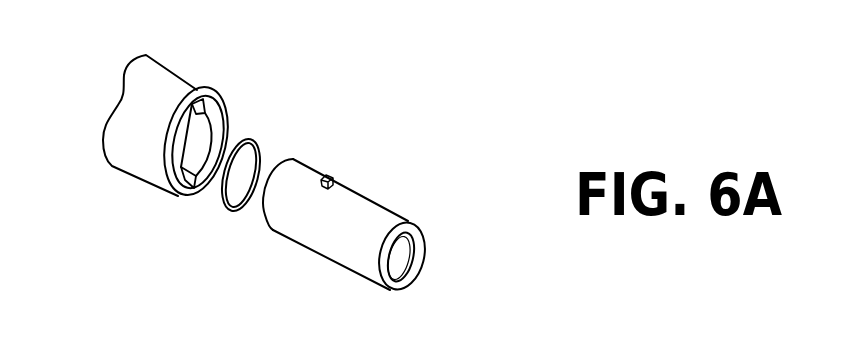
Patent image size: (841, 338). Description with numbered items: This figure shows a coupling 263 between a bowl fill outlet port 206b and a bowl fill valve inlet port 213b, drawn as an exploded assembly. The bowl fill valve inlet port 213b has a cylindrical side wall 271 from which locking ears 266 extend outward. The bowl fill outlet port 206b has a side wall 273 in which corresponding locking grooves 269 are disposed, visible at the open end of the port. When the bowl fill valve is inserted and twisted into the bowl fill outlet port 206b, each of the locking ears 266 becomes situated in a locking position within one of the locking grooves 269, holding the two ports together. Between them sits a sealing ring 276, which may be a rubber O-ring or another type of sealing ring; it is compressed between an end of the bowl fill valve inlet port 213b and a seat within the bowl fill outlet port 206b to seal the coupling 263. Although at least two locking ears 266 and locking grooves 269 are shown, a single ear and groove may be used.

The coupling 263 is at (458, 57).
The bowl fill outlet port 206b is at (115, 190).
The locking grooves 269 is at (202, 101).
The side wall 273 is at (204, 121).
The sealing ring 276 is at (250, 138).
The bowl fill valve inlet port 213b is at (435, 170).
The locking ears 266 is at (330, 178).
The side wall 271 is at (310, 227).